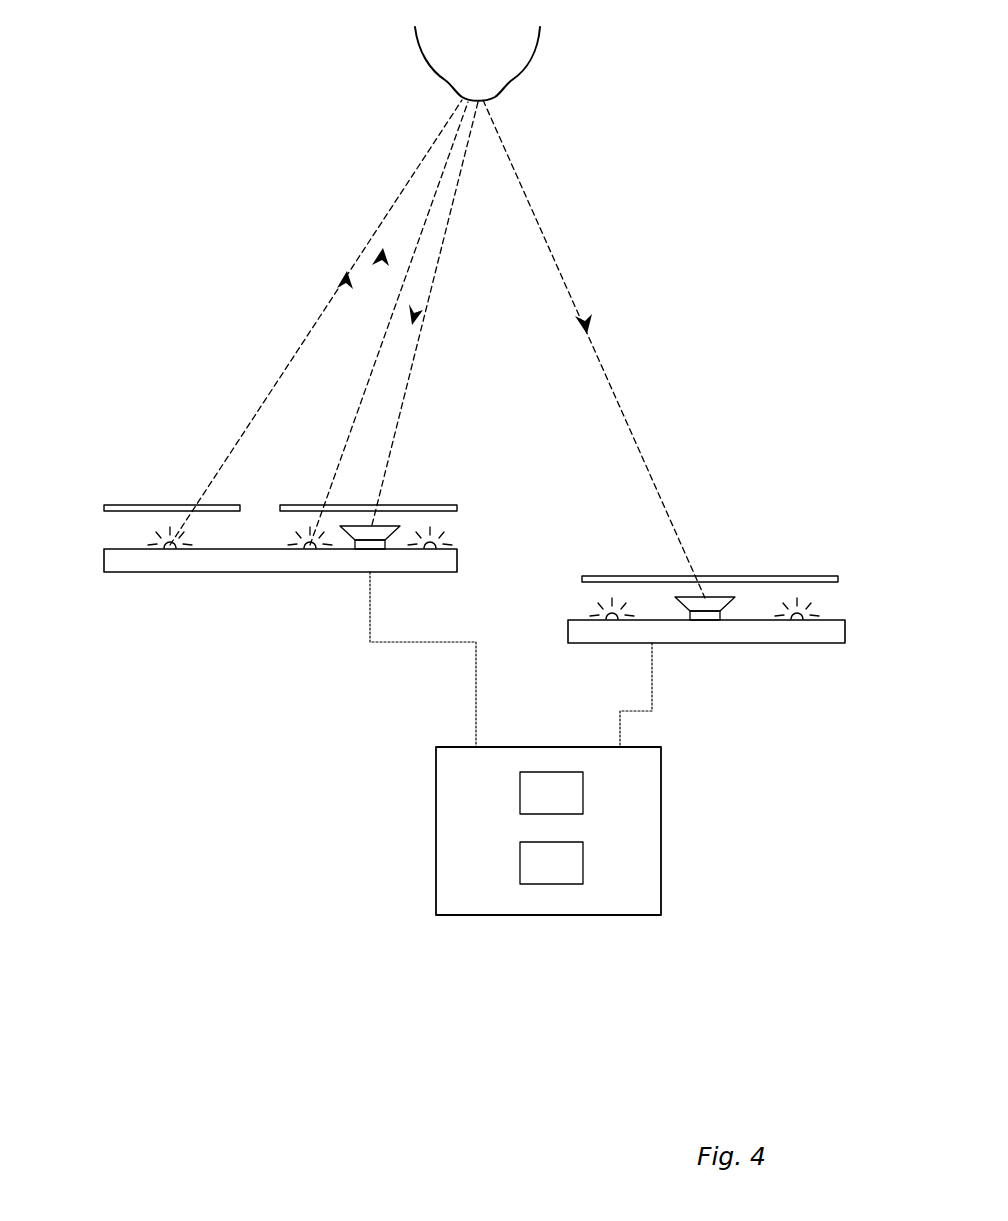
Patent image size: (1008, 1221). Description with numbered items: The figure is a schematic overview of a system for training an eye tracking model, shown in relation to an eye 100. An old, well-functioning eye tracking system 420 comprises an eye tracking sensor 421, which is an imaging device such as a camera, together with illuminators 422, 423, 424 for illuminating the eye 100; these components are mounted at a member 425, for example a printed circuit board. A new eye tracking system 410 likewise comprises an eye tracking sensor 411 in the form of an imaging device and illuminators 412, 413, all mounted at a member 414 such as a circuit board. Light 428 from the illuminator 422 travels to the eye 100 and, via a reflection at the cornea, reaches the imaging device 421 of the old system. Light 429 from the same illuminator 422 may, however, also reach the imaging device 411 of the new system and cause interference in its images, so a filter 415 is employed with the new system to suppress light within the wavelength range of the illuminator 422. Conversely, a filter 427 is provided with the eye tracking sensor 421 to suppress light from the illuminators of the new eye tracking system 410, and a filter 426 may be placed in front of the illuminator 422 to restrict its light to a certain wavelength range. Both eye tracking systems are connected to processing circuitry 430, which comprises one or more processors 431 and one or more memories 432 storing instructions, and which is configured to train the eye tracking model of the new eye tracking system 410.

The eye 100 is at (550, 72).
The new eye tracking system 410 is at (676, 664).
The eye tracking sensor 411 is at (712, 622).
The illuminator 412 is at (811, 652).
The illuminator 413 is at (612, 622).
The member 414 is at (575, 620).
The filter 415 is at (815, 575).
The old eye tracking system 420 is at (285, 586).
The eye tracking sensor 421 is at (364, 550).
The illuminator 422 is at (172, 550).
The illuminator 423 is at (310, 550).
The illuminator 424 is at (430, 550).
The member 425 is at (110, 573).
The filter 426 is at (140, 504).
The filter 427 is at (432, 504).
The light 428 is at (322, 318).
The light 429 is at (406, 212).
The processing circuitry 430 is at (493, 833).
The processor 431 is at (552, 772).
The memory 432 is at (553, 884).